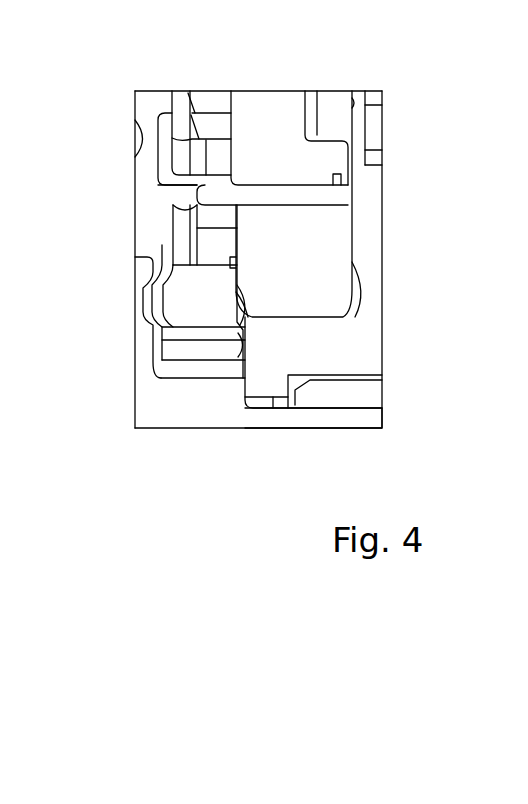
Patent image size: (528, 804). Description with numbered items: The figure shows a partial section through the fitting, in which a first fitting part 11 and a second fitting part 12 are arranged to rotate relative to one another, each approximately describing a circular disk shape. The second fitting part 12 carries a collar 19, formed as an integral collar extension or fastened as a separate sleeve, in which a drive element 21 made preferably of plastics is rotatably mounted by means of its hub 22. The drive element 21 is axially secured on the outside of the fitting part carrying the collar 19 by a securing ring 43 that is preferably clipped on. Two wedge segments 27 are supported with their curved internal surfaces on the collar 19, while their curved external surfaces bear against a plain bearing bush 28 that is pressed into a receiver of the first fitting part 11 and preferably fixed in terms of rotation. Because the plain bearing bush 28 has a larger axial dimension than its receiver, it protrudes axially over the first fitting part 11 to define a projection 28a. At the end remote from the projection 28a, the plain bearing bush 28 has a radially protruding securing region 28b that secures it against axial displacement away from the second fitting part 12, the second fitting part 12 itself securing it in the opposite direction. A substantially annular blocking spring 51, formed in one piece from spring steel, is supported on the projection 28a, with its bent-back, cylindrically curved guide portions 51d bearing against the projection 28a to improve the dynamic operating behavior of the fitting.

The first fitting part 11 is at (285, 91).
The second fitting part 12 is at (382, 320).
The drive element 21 is at (135, 396).
The blocking spring 51 is at (156, 143).
The guide portions 51d is at (188, 179).
The projection 28a is at (218, 200).
The plain bearing bush 28 is at (300, 183).
The securing region 28b is at (337, 191).
The wedge segments 27 is at (327, 233).
The collar 19 is at (305, 353).
The securing ring 43 is at (370, 398).
The hub 22 is at (293, 418).